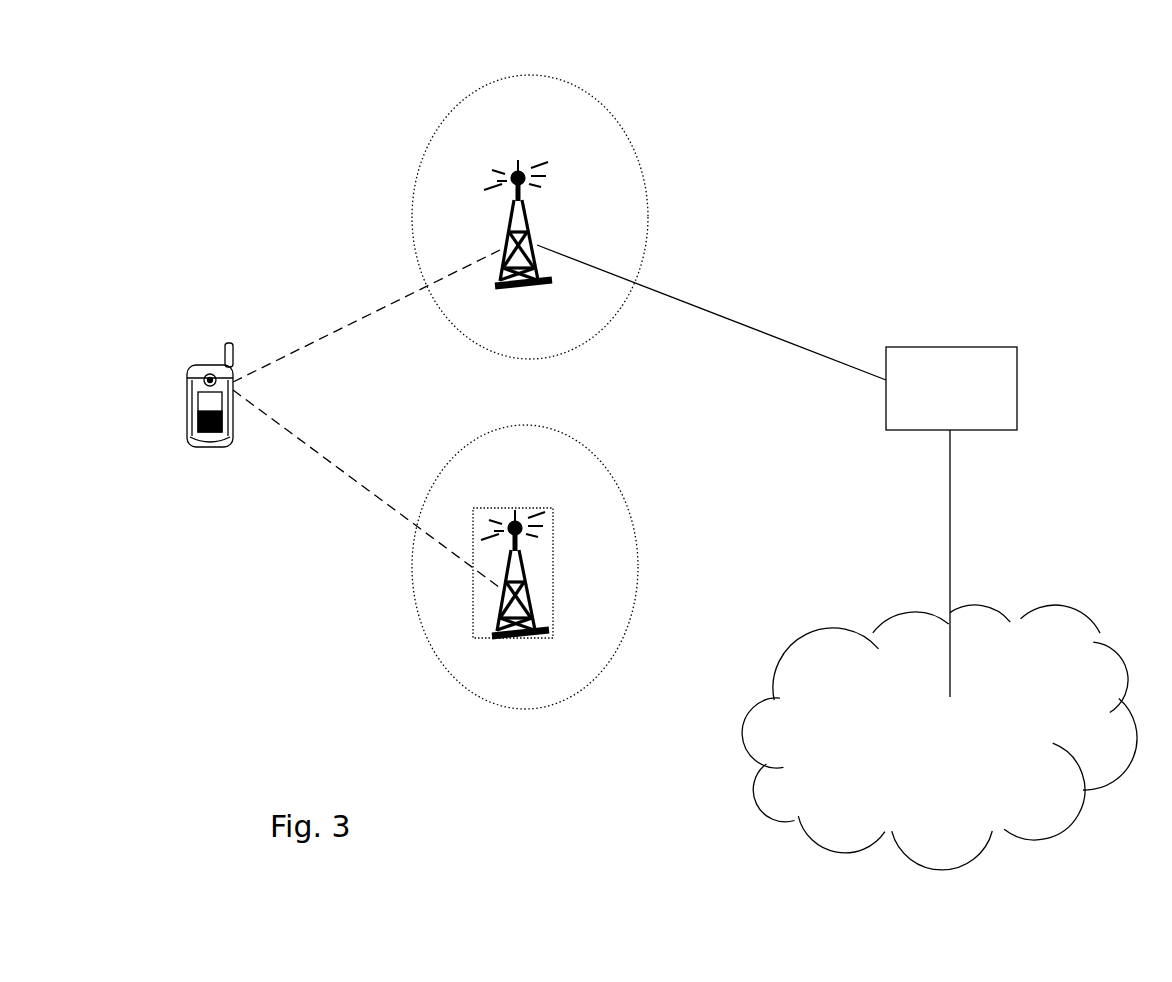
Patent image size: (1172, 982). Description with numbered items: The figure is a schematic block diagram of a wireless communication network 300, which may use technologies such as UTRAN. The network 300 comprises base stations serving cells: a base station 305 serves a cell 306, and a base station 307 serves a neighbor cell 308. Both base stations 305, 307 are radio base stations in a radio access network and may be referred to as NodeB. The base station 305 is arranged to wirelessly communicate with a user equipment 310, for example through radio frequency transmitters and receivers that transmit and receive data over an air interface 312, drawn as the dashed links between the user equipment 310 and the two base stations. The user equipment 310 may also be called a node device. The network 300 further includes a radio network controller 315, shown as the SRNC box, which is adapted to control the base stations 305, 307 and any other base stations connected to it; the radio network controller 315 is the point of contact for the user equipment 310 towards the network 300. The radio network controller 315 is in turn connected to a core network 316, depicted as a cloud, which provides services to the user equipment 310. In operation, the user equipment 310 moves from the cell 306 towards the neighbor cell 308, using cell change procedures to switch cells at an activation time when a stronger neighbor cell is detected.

The wireless communication network 300 is at (890, 191).
The base station 305 is at (527, 210).
The cell 306 is at (593, 110).
The base station 307 is at (520, 627).
The cell 308 is at (440, 658).
The user equipment 310 is at (217, 368).
The air interface 312 is at (313, 448).
The radio network controller 315 is at (950, 363).
The core network 316 is at (768, 778).